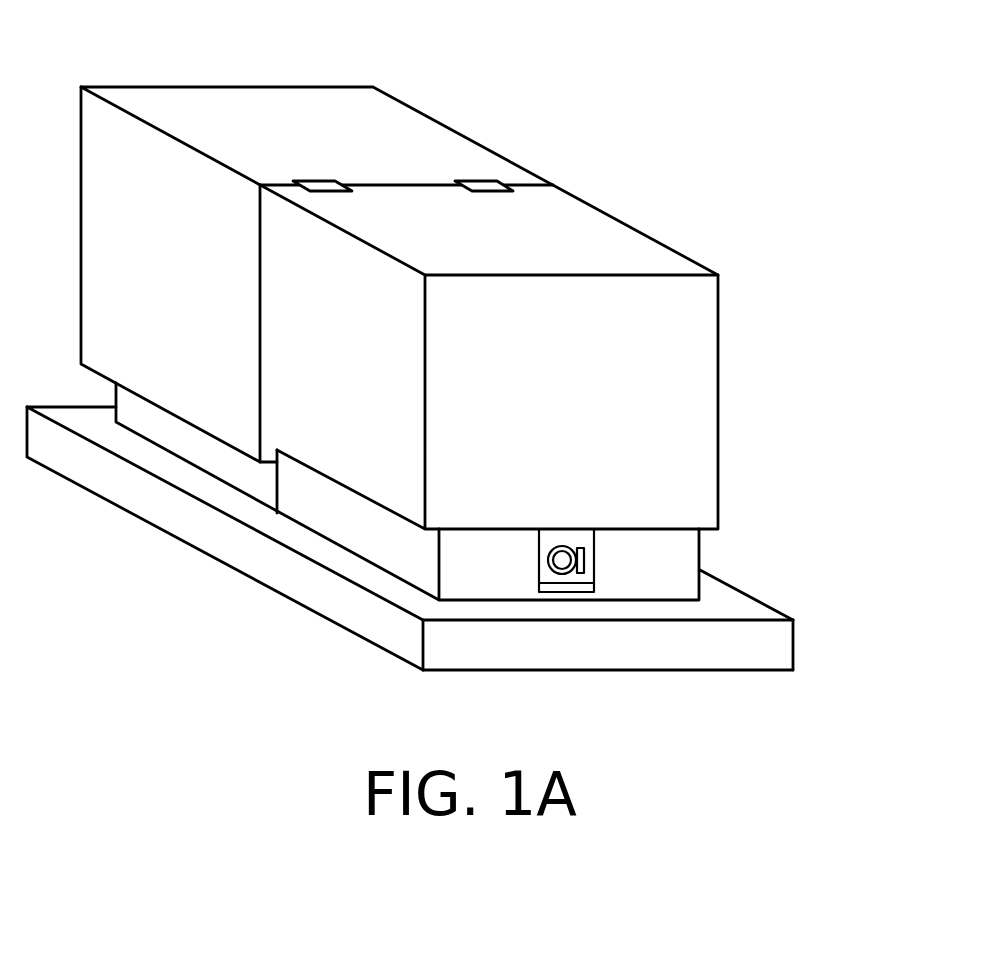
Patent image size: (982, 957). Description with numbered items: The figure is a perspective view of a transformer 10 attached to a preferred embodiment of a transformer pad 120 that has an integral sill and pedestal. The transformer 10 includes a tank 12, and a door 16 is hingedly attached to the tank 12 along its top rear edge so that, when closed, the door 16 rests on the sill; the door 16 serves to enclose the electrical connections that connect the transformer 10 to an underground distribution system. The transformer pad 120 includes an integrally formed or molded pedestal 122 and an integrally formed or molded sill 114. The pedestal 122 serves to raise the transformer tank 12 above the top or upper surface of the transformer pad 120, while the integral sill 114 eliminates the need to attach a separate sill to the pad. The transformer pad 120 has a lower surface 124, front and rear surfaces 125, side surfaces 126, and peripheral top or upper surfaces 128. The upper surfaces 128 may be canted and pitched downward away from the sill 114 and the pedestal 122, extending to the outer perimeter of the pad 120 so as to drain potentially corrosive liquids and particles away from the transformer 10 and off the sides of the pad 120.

The transformer 10 is at (553, 185).
The tank 12 is at (342, 103).
The door 16 is at (680, 373).
The sill 114 is at (335, 547).
The transformer pad 120 is at (560, 652).
The pedestal 122 is at (208, 457).
The lower surface 124 is at (717, 672).
The front and rear surfaces 125 is at (765, 643).
The side surfaces 126 is at (340, 622).
The peripheral upper surfaces 128 is at (237, 508).